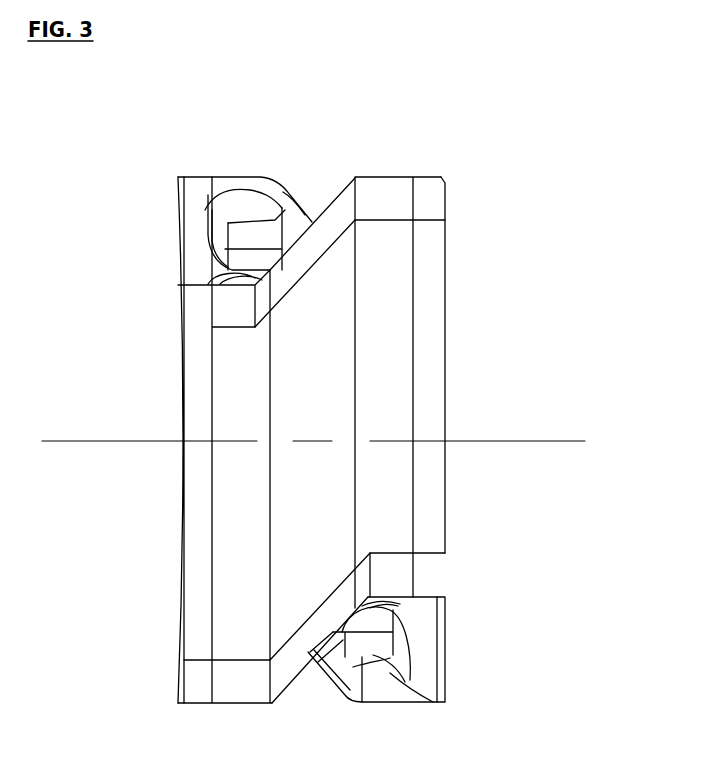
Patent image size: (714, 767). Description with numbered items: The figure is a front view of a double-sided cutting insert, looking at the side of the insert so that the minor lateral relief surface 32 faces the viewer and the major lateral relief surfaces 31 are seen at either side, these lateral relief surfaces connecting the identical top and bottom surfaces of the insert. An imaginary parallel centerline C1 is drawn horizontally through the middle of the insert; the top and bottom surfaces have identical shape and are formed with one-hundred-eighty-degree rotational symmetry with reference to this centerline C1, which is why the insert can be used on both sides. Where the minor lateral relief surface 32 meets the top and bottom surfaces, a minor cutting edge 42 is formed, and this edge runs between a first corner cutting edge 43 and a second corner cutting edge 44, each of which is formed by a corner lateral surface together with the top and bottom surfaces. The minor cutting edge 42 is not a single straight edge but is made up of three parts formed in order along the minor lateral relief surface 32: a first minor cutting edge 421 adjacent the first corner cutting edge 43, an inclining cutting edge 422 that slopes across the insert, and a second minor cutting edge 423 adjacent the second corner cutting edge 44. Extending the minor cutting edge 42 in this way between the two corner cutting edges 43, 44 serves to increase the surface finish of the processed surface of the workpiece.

The major lateral relief surface 31 is at (183, 495).
The minor lateral relief surface 32 is at (303, 526).
The minor cutting edge 42 is at (327, 175).
The first minor cutting edge 421 is at (388, 177).
The inclining cutting edge 422 is at (322, 213).
The second minor cutting edge 423 is at (211, 200).
The first corner cutting edge 43 is at (430, 177).
The second corner cutting edge 44 is at (208, 286).
The imaginary parallel centerline C1 is at (339, 442).